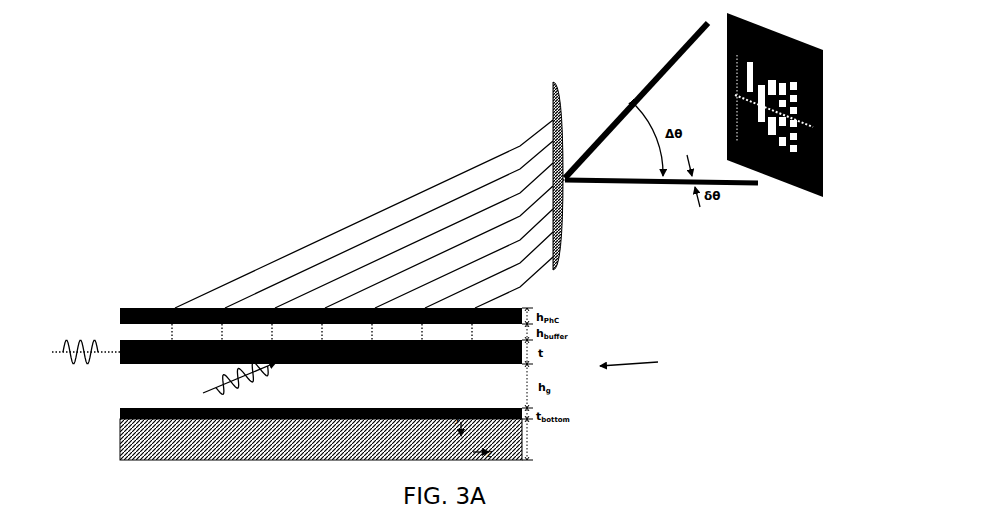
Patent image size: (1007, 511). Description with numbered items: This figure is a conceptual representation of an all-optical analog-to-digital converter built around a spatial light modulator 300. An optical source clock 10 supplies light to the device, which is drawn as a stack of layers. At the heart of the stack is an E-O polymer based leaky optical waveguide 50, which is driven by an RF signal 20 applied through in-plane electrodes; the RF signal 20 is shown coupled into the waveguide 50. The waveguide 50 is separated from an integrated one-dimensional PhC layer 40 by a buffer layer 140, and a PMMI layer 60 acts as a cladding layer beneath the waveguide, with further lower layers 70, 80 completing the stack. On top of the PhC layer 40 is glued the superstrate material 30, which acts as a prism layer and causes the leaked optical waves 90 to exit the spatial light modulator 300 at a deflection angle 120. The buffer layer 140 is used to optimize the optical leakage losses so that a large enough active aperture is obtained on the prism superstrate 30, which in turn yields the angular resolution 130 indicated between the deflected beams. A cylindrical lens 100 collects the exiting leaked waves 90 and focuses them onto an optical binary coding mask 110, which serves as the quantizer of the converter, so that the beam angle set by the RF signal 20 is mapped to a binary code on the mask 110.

The optical source clock 10 is at (62, 359).
The RF signal 20 is at (258, 380).
The superstrate material 30 is at (120, 209).
The 1D PhC layer 40 is at (120, 310).
The E-O polymer based leaky optical waveguide 50 is at (387, 363).
The PMMI layer 60 is at (125, 388).
The bottom layer 70 is at (120, 414).
The substrate 80 is at (120, 440).
The leaked optical waves 90 is at (355, 223).
The cylindrical lens 100 is at (562, 258).
The optical binary coding mask 110 is at (823, 148).
The deflection angle 120 is at (655, 140).
The angular resolution 130 is at (687, 187).
The buffer layer 140 is at (120, 334).
The spatial light modulator 300 is at (654, 368).